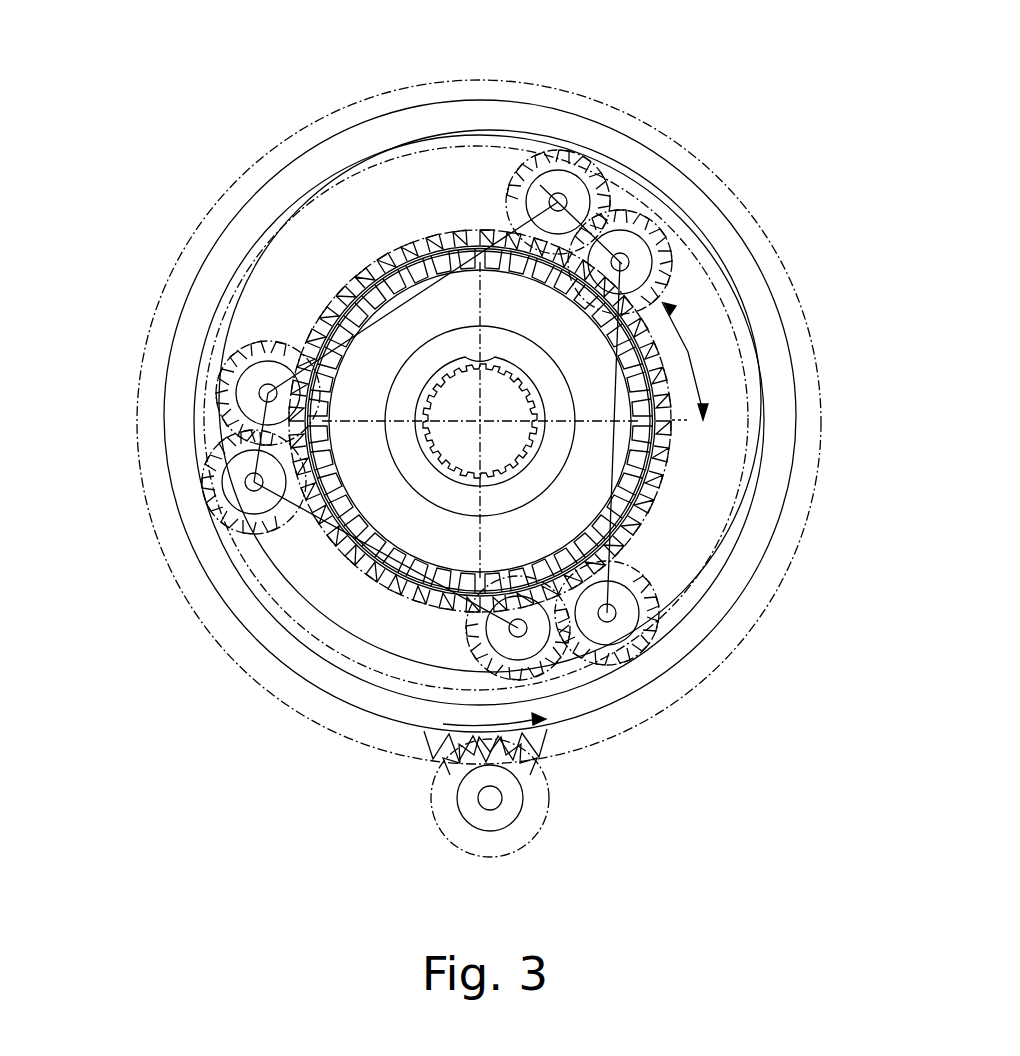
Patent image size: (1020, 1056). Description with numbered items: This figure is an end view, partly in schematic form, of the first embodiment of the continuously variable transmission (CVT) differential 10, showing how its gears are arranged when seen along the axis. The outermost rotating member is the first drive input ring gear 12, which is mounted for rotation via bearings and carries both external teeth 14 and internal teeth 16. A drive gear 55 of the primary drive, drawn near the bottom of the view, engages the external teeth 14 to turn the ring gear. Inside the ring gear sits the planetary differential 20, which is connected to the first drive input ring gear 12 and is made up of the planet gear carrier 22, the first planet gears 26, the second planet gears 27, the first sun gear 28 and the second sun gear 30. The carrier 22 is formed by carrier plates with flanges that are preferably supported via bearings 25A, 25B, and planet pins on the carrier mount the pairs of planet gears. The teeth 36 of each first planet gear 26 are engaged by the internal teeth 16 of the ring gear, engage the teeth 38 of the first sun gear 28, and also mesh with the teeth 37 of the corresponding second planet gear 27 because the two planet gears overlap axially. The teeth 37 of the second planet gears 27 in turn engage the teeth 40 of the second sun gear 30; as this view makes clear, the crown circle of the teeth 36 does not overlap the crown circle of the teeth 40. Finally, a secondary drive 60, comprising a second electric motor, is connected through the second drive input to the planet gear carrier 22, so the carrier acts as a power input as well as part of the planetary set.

The continuously variable transmission (CVT) differential 10 is at (750, 90).
The first drive input ring gear 12 is at (778, 460).
The external teeth 14 is at (543, 750).
The internal teeth 16 is at (578, 697).
The planetary differential 20 is at (692, 288).
The planet gear carrier 22 is at (652, 458).
The bearing 25A is at (528, 190).
The bearing 25B is at (665, 248).
The first planet gear 26 is at (592, 178).
The second planet gear 27 is at (660, 238).
The first sun gear 28 is at (400, 260).
The second sun gear 30 is at (430, 252).
The teeth of the first planet gears 36 is at (560, 195).
The teeth of the second planet gears 37 is at (622, 262).
The teeth of the first sun gear 38 is at (372, 264).
The teeth of the second sun gear 40 is at (473, 260).
The drive gear 55 is at (510, 812).
The secondary drive 60 is at (703, 318).